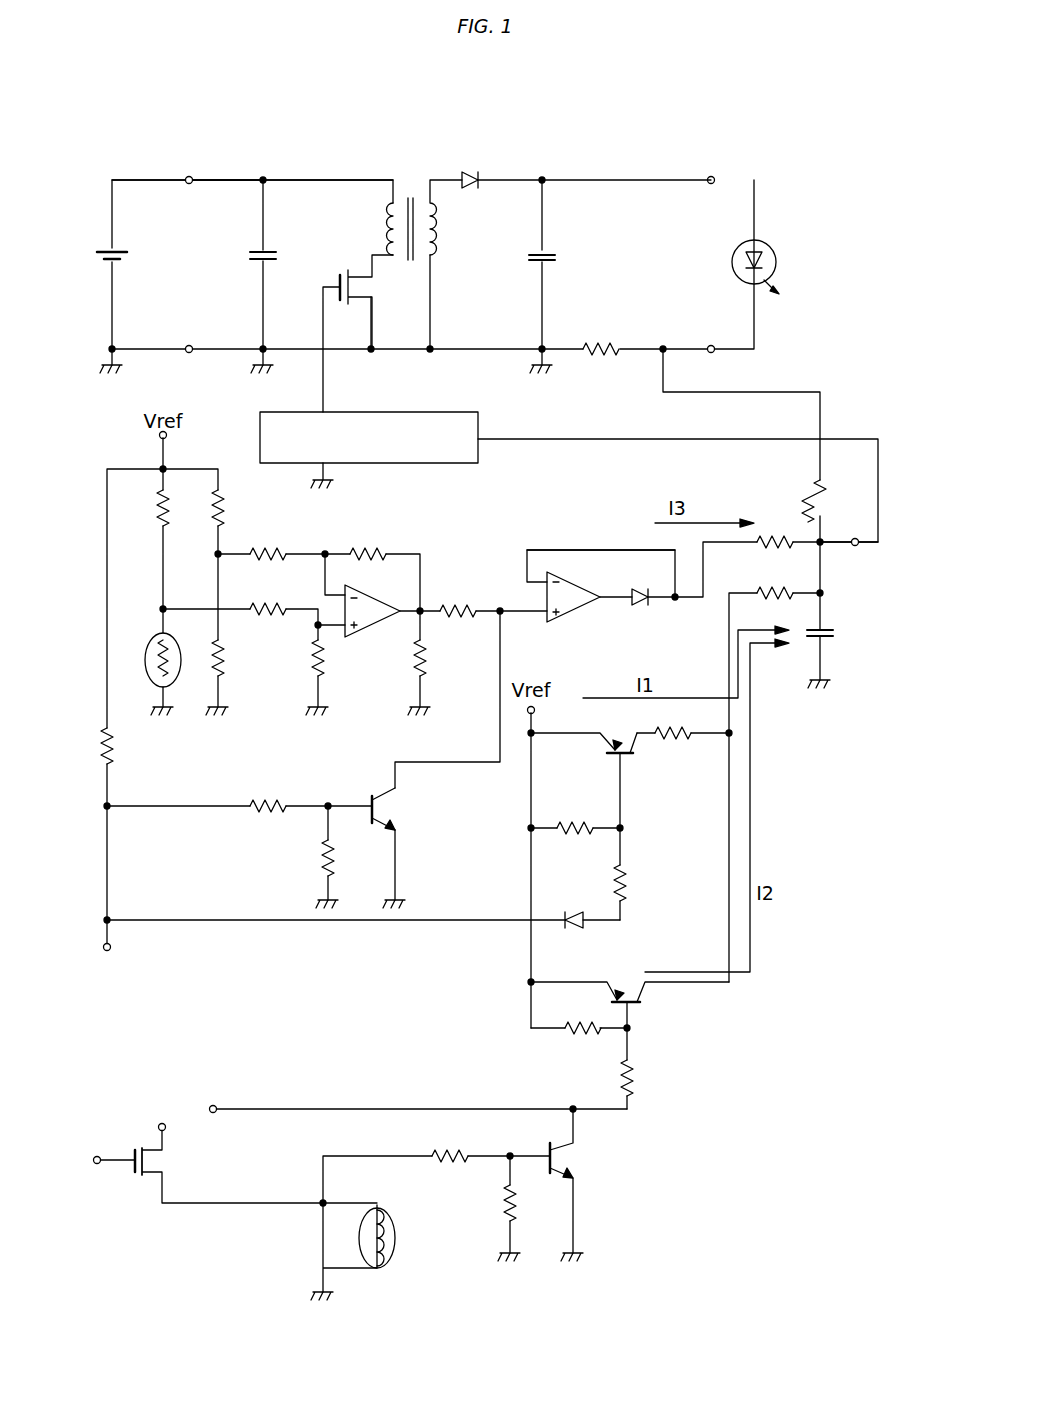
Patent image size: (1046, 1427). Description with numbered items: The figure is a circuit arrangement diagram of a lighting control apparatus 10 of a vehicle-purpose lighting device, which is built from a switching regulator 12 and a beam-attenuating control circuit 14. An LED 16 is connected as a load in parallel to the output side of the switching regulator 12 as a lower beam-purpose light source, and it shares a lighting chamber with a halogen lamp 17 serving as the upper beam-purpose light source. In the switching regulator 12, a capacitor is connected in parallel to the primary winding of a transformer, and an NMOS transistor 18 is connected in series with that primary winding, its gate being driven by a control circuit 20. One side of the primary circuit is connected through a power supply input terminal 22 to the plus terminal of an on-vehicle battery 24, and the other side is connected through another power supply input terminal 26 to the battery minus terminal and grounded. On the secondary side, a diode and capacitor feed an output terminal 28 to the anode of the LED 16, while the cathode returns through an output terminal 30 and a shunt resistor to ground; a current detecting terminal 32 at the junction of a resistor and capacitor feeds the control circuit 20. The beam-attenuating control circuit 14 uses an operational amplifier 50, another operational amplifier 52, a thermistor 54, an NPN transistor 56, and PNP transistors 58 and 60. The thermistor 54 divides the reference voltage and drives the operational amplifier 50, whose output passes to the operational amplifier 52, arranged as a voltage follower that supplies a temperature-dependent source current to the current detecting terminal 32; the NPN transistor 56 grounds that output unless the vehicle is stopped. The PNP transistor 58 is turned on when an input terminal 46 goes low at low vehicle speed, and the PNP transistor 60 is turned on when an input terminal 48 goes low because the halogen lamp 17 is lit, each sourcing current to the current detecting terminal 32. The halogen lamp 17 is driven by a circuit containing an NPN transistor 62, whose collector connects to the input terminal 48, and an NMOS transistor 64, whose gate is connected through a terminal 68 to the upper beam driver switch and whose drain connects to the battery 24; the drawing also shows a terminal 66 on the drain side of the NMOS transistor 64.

The lighting control apparatus 10 is at (377, 146).
The switching regulator 12 is at (306, 170).
The beam-attenuating control circuit 14 is at (516, 538).
The LED 16 is at (777, 256).
The halogen lamp 17 is at (390, 1262).
The NMOS transistor 18 is at (374, 290).
The control circuit 20 is at (362, 412).
The power supply input terminal 22 is at (189, 177).
The on-vehicle battery 24 is at (130, 256).
The power supply input terminal 26 is at (190, 346).
The output terminal 28 is at (711, 176).
The output terminal 30 is at (711, 345).
The current detecting terminal 32 is at (855, 546).
The input terminal 46 is at (109, 951).
The input terminal 48 is at (216, 1106).
The operational amplifier 50 is at (345, 568).
The operational amplifier 52 is at (571, 557).
The thermistor 54 is at (152, 647).
The NPN transistor 56 is at (369, 793).
The PNP transistor 58 is at (602, 760).
The PNP transistor 60 is at (641, 1006).
The NPN transistor 62 is at (568, 1158).
The NMOS transistor 64 is at (164, 1158).
The terminal 66 is at (162, 1124).
The terminal 68 is at (97, 1164).